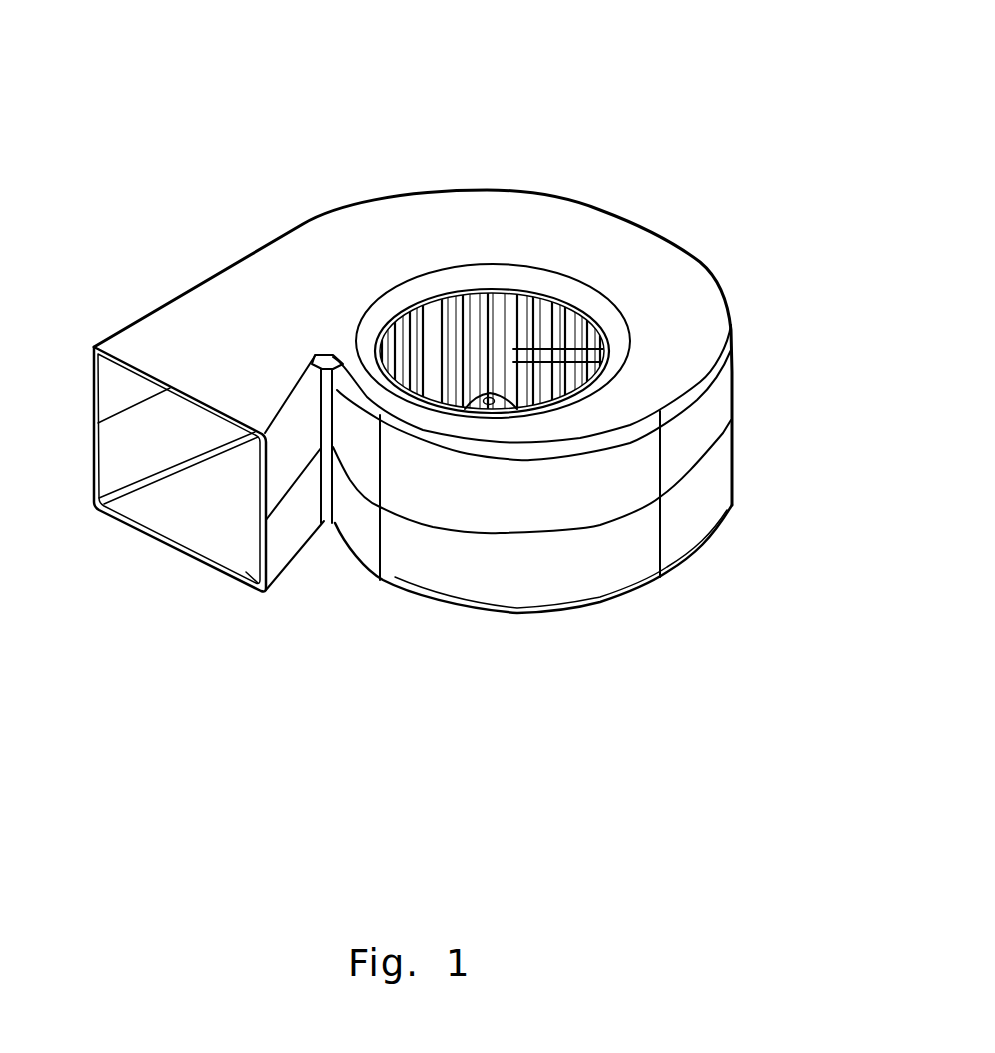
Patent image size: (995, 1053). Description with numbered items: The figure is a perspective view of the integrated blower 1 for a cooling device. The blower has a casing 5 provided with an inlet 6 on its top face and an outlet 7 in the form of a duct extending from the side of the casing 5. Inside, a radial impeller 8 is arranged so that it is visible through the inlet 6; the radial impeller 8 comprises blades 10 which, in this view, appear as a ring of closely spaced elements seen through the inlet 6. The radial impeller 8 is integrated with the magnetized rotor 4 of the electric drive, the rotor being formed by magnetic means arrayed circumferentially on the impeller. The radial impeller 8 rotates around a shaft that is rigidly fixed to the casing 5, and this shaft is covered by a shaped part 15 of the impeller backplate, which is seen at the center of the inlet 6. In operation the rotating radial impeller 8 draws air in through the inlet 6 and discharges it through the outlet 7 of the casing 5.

The integrated blower 1 is at (677, 179).
The magnetized rotor 4 is at (542, 259).
The casing 5 is at (687, 523).
The inlet 6 is at (510, 276).
The outlet 7 is at (185, 500).
The radial impeller 8 is at (597, 345).
The blades 10 is at (546, 327).
The shaped part 15 is at (477, 405).